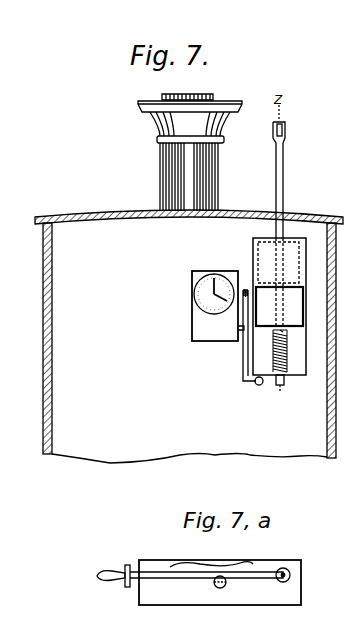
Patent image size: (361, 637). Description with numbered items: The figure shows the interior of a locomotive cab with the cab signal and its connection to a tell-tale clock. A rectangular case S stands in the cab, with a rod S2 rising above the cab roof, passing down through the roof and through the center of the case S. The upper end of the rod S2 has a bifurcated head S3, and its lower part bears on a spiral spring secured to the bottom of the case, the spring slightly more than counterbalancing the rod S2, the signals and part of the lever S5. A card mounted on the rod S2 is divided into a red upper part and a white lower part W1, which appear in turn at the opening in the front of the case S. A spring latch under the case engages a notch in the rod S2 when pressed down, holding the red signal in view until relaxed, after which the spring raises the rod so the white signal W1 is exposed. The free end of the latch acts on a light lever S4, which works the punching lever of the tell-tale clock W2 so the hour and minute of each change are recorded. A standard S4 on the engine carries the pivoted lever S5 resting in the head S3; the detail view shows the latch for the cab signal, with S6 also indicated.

In FIG. 7, the rectangular case S is at (253, 248).
In FIG. 7, the rod S2 is at (286, 128).
In FIG. 7, the bifurcated head S3 is at (255, 384).
In FIG. 7A, the bifurcated head S3 is at (193, 582).
In FIG. 7, the standard S4 is at (243, 367).
In FIG. 7A, the standard S4 is at (190, 584).
In FIG. 7, the lever S5 is at (288, 336).
In FIG. 7A, the lever spring arm S6 is at (197, 563).
In FIG. 7, the white signal W1 is at (304, 314).
In FIG. 7, the tell-tale clock W2 is at (191, 300).